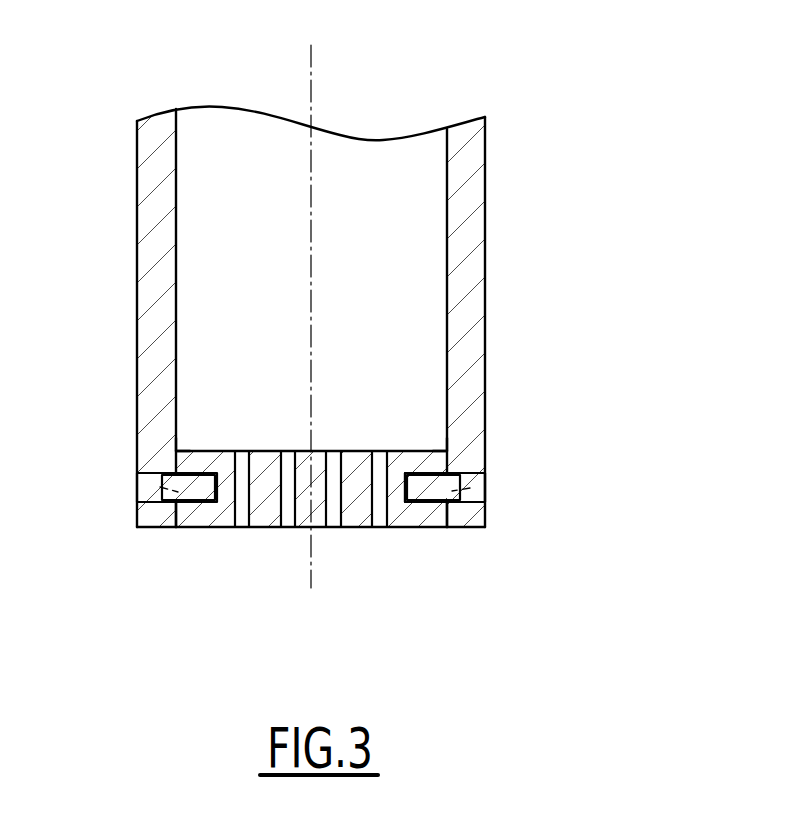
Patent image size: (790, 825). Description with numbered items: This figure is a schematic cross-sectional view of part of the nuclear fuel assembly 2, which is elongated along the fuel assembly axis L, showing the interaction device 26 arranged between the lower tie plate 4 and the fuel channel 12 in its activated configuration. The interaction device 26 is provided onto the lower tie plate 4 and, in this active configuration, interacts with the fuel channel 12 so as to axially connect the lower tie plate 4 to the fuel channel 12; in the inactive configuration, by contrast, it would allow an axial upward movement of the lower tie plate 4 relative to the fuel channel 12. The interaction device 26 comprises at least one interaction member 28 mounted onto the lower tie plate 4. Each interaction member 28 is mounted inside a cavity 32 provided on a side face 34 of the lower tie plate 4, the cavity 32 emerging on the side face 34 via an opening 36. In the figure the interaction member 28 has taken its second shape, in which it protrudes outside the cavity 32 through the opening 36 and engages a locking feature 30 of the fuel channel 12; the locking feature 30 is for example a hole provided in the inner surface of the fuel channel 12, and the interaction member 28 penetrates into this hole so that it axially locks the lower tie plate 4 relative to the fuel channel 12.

The fuel assembly axis L is at (311, 71).
The nuclear fuel assembly 2 is at (568, 105).
The fuel channel 12 is at (462, 262).
The lower tie plate 4 is at (353, 510).
The interaction device 26 is at (580, 481).
The interaction member 28 is at (195, 488).
The locking feature 30 is at (154, 498).
The cavity 32 is at (188, 507).
The side face 34 is at (172, 457).
The opening 36 is at (160, 487).